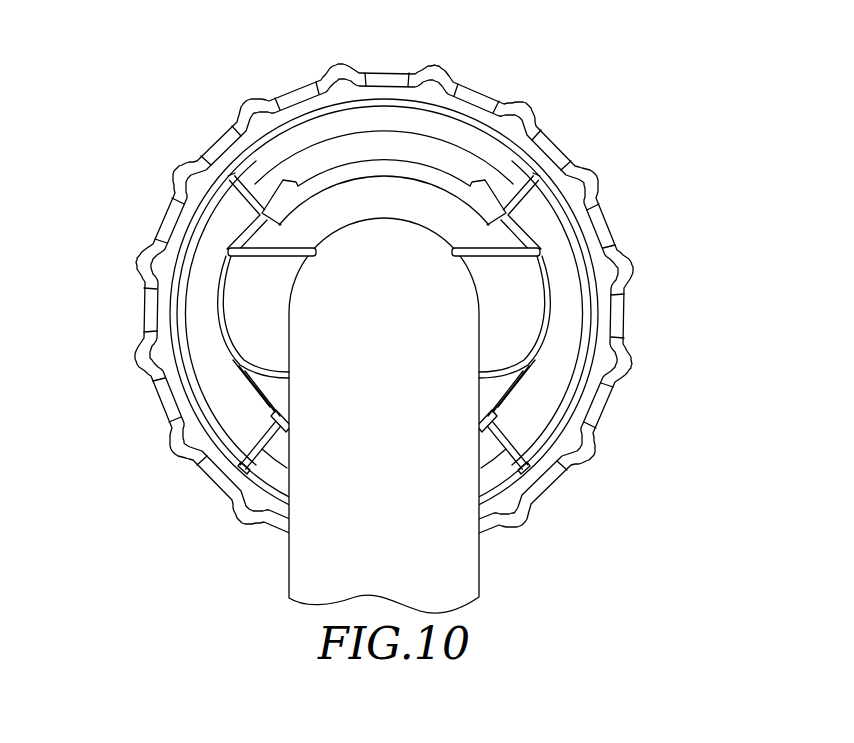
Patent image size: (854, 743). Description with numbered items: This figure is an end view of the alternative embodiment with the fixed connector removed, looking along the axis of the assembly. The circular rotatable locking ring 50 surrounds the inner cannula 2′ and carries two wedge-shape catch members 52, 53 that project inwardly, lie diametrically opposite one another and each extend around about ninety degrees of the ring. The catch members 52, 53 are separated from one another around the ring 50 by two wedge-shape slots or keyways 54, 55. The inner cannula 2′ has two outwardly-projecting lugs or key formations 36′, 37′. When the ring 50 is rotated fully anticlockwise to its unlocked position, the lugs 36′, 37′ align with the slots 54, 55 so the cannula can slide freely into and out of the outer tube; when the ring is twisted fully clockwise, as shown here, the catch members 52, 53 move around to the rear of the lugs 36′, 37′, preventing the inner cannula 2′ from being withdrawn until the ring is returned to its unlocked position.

The rotatable locking ring 50 is at (486, 101).
The catch member 52 is at (194, 344).
The catch member 53 is at (568, 292).
The slot or keyway 54 is at (405, 117).
The slot or keyway 55 is at (524, 463).
The inner cannula 2′ is at (295, 551).
The lug or key formation 36′ is at (242, 287).
The lug or key formation 37′ is at (516, 270).